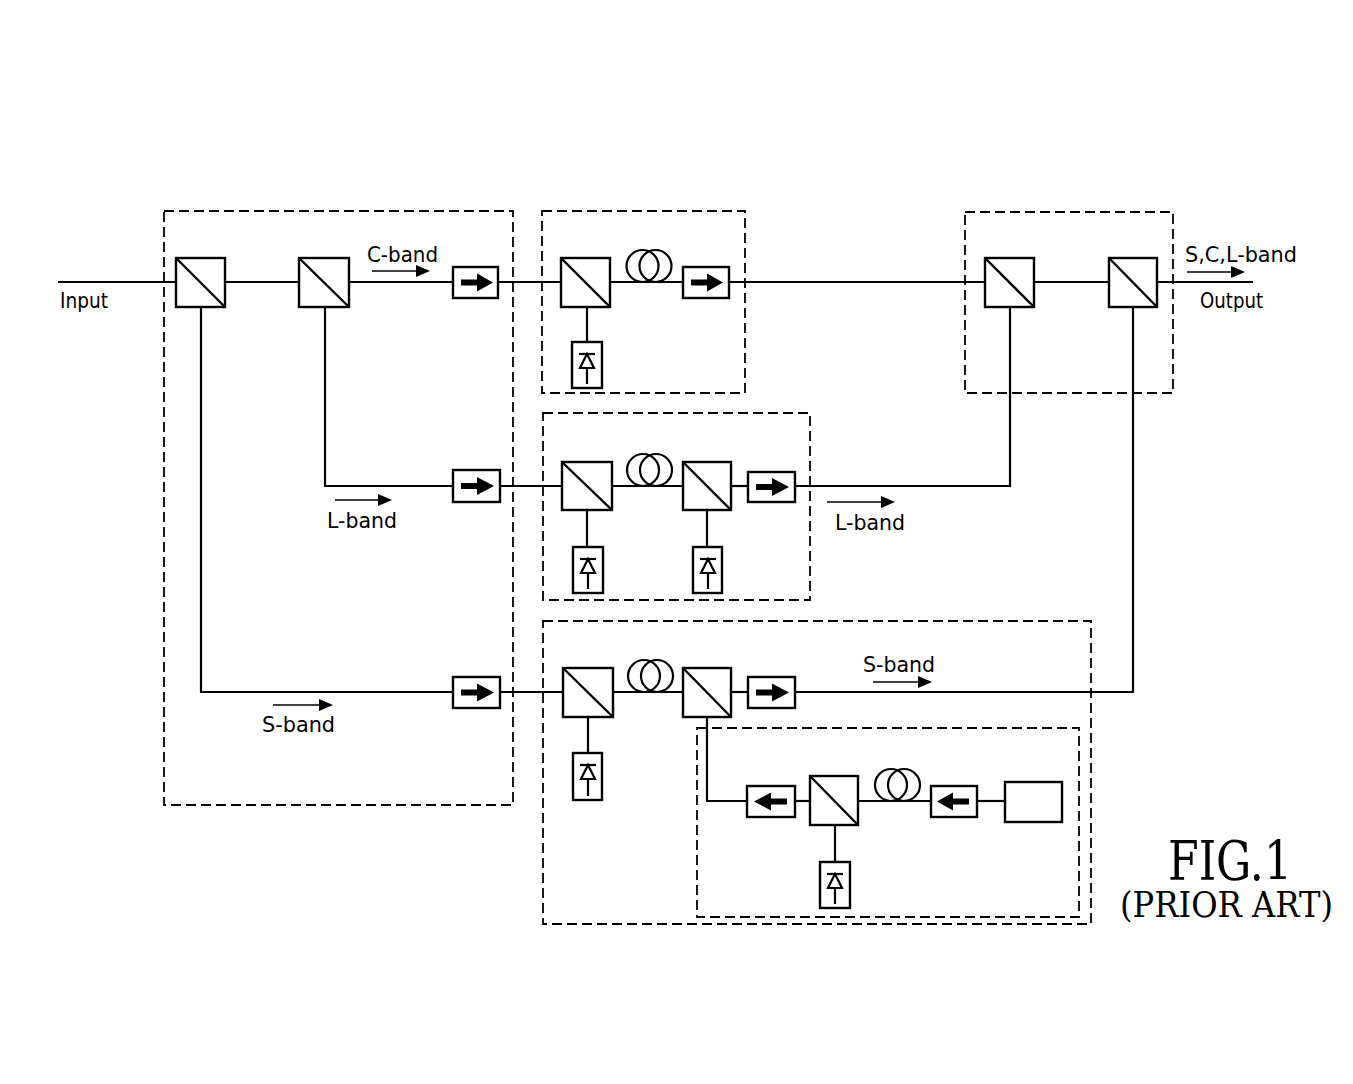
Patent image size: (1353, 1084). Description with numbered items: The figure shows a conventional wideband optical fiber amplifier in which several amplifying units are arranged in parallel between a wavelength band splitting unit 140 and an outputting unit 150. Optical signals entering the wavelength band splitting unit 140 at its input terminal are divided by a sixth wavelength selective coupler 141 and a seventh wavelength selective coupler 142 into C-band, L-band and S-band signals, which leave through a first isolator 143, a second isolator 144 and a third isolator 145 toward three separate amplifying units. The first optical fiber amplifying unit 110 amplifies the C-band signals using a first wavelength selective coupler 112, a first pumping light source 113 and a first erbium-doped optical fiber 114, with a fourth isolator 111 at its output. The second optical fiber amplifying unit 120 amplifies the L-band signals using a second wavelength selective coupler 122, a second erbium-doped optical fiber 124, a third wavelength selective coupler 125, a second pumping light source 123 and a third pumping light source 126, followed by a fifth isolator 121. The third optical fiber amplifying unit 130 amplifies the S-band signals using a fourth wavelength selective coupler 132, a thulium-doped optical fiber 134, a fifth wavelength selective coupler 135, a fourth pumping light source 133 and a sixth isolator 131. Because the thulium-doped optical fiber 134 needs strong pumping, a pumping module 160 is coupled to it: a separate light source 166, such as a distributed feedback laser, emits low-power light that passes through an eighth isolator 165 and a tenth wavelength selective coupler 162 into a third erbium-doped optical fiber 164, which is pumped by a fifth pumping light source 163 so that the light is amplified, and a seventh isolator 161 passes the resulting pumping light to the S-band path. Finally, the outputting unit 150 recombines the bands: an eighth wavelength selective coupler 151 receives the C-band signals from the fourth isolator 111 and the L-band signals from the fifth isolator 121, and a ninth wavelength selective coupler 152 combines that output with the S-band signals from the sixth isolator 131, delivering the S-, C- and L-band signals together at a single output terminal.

The first optical fiber amplifying unit 110 is at (643, 246).
The fourth isolator 111 is at (706, 267).
The first wavelength selective coupler 112 is at (584, 258).
The first pumping light source 113 is at (602, 365).
The first erbium-doped optical fiber 114 is at (650, 283).
The second optical fiber amplifying unit 120 is at (749, 506).
The fifth isolator 121 is at (771, 472).
The second wavelength selective coupler 122 is at (586, 462).
The second pumping light source 123 is at (603, 570).
The second erbium-doped optical fiber 124 is at (650, 487).
The third wavelength selective coupler 125 is at (706, 462).
The third pumping light source 126 is at (722, 570).
The third optical fiber amplifying unit 130 is at (880, 772).
The sixth isolator 131 is at (771, 677).
The fourth wavelength selective coupler 132 is at (586, 668).
The fourth pumping light source 133 is at (602, 777).
The thulium-doped optical fiber 134 is at (650, 693).
The fifth wavelength selective coupler 135 is at (706, 668).
The wavelength band splitting unit 140 is at (338, 452).
The sixth wavelength selective coupler 141 is at (199, 258).
The seventh wavelength selective coupler 142 is at (322, 258).
The first isolator 143 is at (474, 267).
The second isolator 144 is at (476, 470).
The third isolator 145 is at (476, 677).
The outputting unit 150 is at (1069, 246).
The eighth wavelength selective coupler 151 is at (1008, 258).
The ninth wavelength selective coupler 152 is at (1133, 258).
The pumping module 160 is at (829, 822).
The seventh isolator 161 is at (771, 818).
The tenth wavelength selective coupler 162 is at (834, 776).
The fifth pumping light source 163 is at (850, 885).
The third erbium-doped optical fiber 164 is at (898, 802).
The eighth isolator 165 is at (955, 818).
The light source 166 is at (1035, 823).